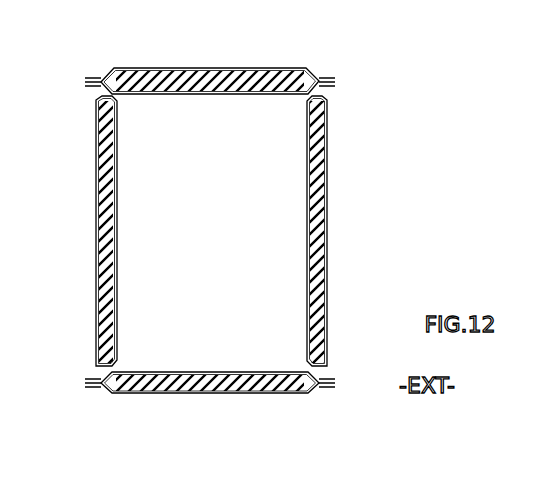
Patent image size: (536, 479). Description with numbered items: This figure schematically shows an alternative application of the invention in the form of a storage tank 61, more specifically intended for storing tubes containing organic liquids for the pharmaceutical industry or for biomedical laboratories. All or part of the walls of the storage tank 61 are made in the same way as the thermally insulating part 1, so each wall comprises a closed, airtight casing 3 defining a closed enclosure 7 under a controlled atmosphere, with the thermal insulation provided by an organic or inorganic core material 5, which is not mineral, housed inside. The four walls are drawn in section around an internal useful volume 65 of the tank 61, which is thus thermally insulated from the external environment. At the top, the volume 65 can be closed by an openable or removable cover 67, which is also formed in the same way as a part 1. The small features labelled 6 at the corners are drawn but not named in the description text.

The thermally insulating part 1 is at (209, 236).
The closed, airtight casing 3 is at (349, 231).
The core material 5 is at (158, 73).
The corner connector 6 is at (100, 78).
The closed enclosure 7 is at (325, 183).
The storage tank 61 is at (96, 276).
The internal useful volume 65 is at (201, 230).
The openable or removable cover 67 is at (220, 67).